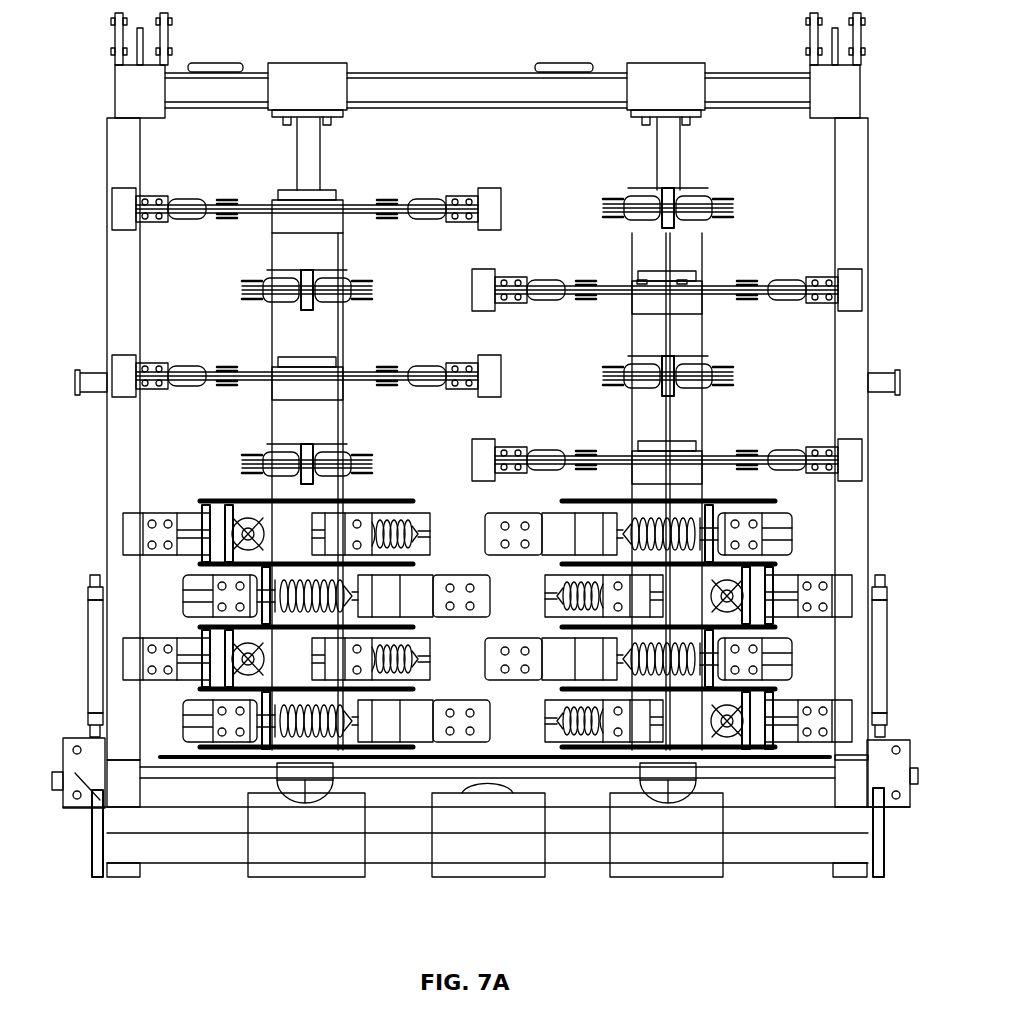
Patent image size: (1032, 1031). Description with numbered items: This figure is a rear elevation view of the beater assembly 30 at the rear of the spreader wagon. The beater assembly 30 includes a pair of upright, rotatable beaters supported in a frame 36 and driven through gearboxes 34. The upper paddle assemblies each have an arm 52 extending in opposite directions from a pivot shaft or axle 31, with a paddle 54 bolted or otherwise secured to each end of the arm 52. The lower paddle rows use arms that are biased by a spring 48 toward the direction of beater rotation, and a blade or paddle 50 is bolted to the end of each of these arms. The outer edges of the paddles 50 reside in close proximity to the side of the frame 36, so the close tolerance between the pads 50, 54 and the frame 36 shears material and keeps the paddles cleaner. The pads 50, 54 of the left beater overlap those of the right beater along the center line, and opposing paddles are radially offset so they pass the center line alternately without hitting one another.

The beater assembly 30 is at (92, 433).
The pivot shaft or axle 31 is at (280, 340).
The gearbox 34 is at (325, 862).
The frame 36 is at (850, 185).
The spring 48 is at (300, 578).
The paddle 50 is at (190, 598).
The arm 52 is at (348, 195).
The paddle 54 is at (108, 213).